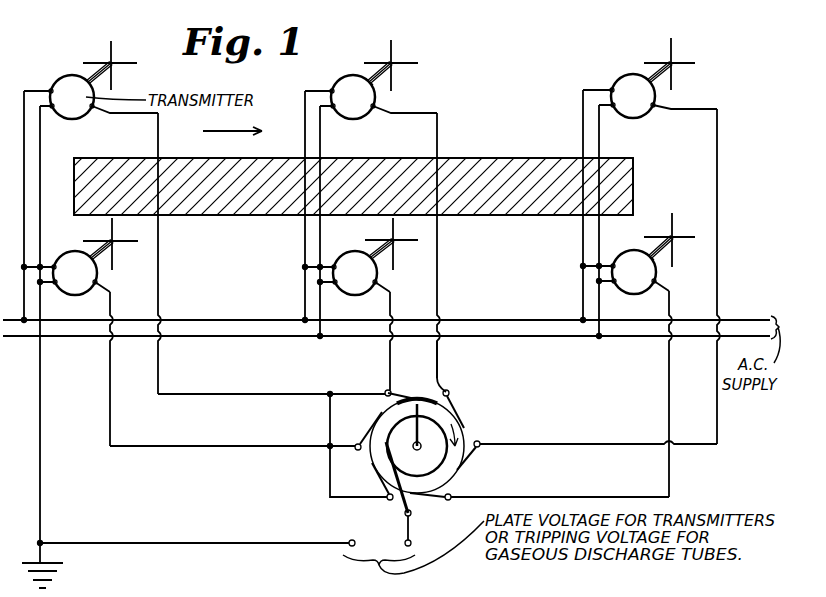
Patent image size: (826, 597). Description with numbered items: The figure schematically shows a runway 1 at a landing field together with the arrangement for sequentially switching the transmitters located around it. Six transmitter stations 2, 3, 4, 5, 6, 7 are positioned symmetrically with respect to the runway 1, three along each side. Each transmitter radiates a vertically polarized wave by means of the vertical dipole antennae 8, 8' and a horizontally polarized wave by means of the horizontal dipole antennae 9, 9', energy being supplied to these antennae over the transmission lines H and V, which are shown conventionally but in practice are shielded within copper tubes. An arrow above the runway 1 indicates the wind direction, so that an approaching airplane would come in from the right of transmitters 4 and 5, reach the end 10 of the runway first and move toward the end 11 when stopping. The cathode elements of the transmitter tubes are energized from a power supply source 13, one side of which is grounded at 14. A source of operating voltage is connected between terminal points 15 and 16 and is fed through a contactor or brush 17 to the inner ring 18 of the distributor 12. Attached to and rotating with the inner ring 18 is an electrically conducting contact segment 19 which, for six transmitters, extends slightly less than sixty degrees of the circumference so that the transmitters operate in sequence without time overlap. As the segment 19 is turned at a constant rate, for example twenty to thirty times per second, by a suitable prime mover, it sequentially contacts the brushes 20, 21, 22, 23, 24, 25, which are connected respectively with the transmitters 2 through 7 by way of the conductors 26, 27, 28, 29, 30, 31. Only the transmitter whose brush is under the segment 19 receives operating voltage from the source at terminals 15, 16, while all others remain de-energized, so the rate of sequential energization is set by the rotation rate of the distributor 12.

The runway 1 is at (513, 178).
The transmitter station 2 is at (55, 84).
The transmitter station 3 is at (353, 119).
The transmitter station 4 is at (633, 118).
The transmitter station 5 is at (636, 294).
The transmitter station 6 is at (355, 295).
The transmitter station 7 is at (75, 295).
The vertical dipole antenna 8 is at (402, 131).
The vertical dipole antenna 8' is at (407, 165).
The horizontal dipole antenna 9 is at (409, 140).
The horizontal dipole antenna 9' is at (368, 135).
The end of runway 10 is at (644, 187).
The end of runway 11 is at (67, 193).
The distributor 12 is at (478, 435).
The power supply source 13 is at (231, 326).
The ground 14 is at (39, 562).
The terminal point 15 is at (350, 542).
The terminal point 16 is at (412, 544).
The contactor or brush 17 is at (400, 502).
The inner ring 18 is at (400, 416).
The contact segment 19 is at (432, 402).
The brush 20 is at (390, 392).
The brush 21 is at (458, 405).
The brush 22 is at (478, 449).
The brush 23 is at (424, 500).
The brush 24 is at (380, 482).
The brush 25 is at (370, 428).
The conductor 26 is at (231, 395).
The conductor 27 is at (440, 355).
The conductor 28 is at (642, 444).
The conductor 29 is at (642, 497).
The conductor 30 is at (328, 477).
The conductor 31 is at (183, 447).
The transmission line H is at (86, 67).
The transmission line V is at (382, 90).